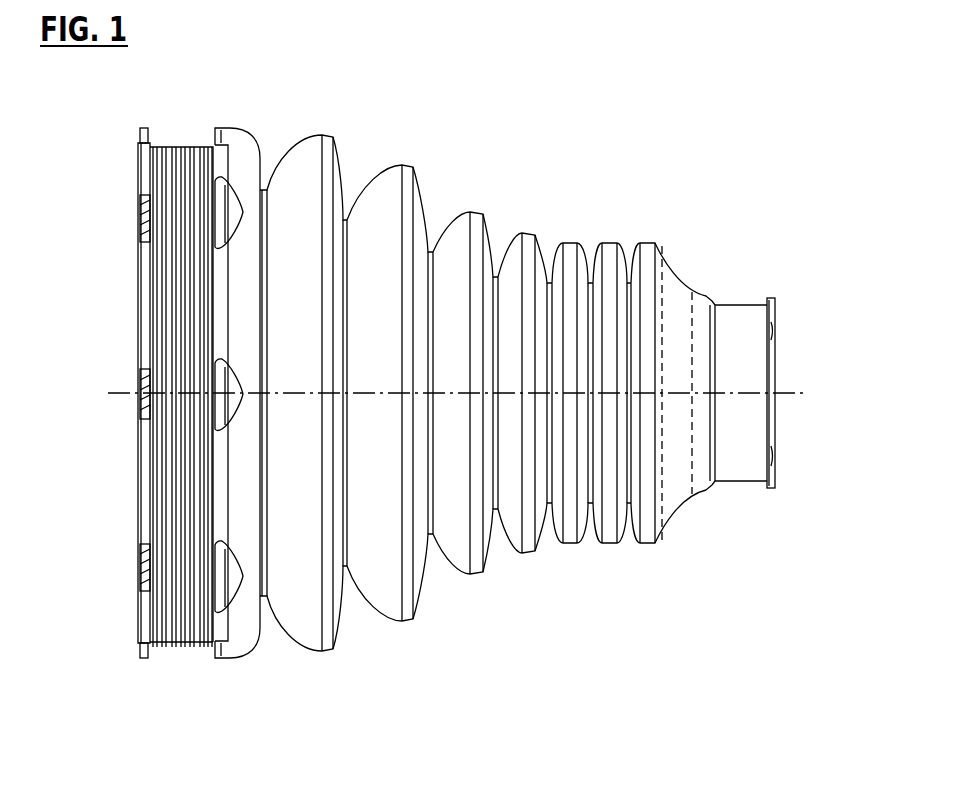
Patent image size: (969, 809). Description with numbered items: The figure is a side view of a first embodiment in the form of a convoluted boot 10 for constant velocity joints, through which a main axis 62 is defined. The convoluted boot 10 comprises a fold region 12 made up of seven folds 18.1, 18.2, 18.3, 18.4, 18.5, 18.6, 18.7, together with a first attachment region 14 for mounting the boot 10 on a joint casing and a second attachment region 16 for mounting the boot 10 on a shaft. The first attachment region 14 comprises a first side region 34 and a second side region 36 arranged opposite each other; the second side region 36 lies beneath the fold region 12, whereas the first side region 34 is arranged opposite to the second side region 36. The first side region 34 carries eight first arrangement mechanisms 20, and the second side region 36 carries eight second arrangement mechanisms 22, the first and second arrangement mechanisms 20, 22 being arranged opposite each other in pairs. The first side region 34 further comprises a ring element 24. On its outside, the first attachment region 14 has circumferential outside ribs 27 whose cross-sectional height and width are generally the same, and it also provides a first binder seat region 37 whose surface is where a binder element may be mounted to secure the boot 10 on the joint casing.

The convoluted boot 10 is at (686, 189).
The fold region 12 is at (519, 169).
The first attachment region 14 is at (192, 117).
The second attachment region 16 is at (762, 264).
The fold 18.1 is at (332, 652).
The fold 18.2 is at (410, 626).
The fold 18.3 is at (471, 578).
The fold 18.4 is at (527, 556).
The fold 18.5 is at (572, 544).
The fold 18.6 is at (612, 546).
The fold 18.7 is at (650, 541).
The first arrangement mechanism 20 is at (140, 131).
The second arrangement mechanism 22 is at (233, 586).
The ring element 24 is at (143, 303).
The circumferential outside rib 27 is at (172, 146).
The first side region 34 is at (137, 126).
The second side region 36 is at (220, 117).
The first binder seat region 37 is at (175, 649).
The main axis 62 is at (795, 393).